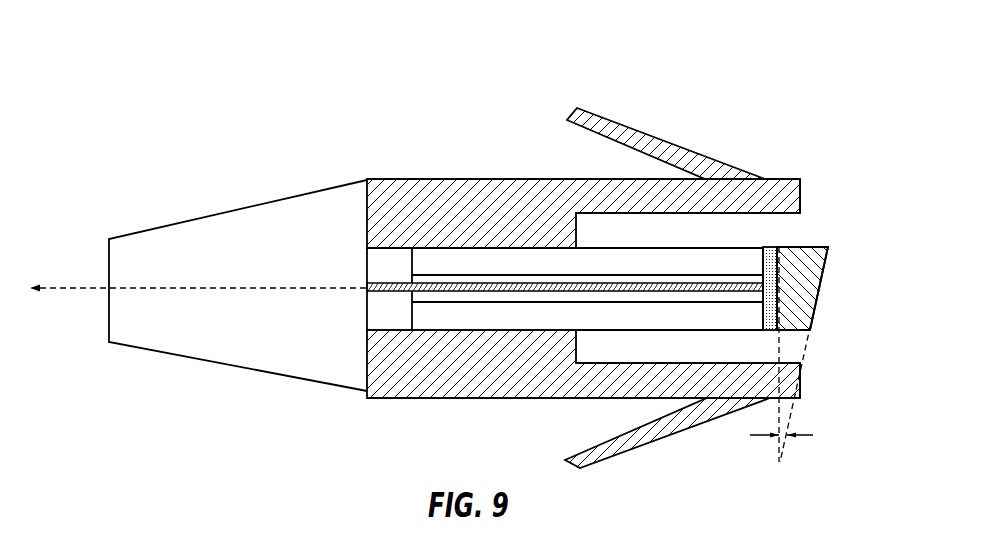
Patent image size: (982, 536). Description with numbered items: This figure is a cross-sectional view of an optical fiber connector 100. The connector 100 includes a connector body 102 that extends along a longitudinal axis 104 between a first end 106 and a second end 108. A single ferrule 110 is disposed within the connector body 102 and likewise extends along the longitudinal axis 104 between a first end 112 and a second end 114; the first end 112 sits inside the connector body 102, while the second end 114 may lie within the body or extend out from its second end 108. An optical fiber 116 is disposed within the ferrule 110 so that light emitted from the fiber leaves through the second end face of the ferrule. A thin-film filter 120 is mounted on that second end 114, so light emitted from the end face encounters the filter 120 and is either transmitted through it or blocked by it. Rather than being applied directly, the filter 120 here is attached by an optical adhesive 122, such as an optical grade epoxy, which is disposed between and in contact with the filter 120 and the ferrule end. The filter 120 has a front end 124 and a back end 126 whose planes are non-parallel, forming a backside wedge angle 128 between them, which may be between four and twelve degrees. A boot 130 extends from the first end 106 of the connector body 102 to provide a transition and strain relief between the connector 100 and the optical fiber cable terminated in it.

The connector 100 is at (350, 108).
The connector body 102 is at (455, 226).
The longitudinal axis 104 is at (88, 291).
The first end 106 is at (367, 213).
The second end 108 is at (801, 197).
The ferrule 110 is at (476, 312).
The first end 112 is at (412, 313).
The second end 114 is at (763, 312).
The optical fiber 116 is at (365, 287).
The thin-film filter 120 is at (840, 235).
The optical adhesive 122 is at (773, 240).
The front end 124 is at (777, 331).
The back end 126 is at (823, 281).
The backside wedge angle 128 is at (807, 437).
The boot 130 is at (236, 335).